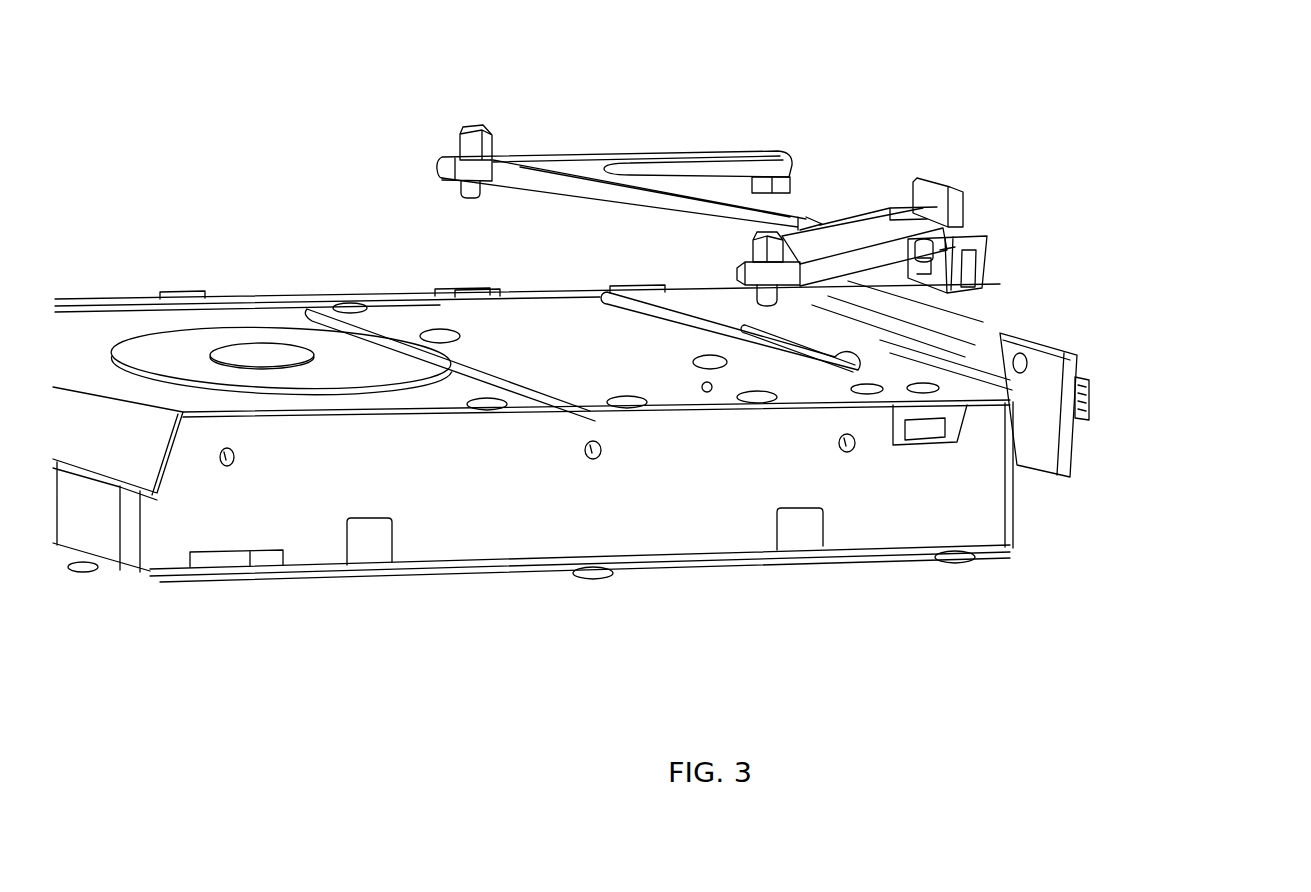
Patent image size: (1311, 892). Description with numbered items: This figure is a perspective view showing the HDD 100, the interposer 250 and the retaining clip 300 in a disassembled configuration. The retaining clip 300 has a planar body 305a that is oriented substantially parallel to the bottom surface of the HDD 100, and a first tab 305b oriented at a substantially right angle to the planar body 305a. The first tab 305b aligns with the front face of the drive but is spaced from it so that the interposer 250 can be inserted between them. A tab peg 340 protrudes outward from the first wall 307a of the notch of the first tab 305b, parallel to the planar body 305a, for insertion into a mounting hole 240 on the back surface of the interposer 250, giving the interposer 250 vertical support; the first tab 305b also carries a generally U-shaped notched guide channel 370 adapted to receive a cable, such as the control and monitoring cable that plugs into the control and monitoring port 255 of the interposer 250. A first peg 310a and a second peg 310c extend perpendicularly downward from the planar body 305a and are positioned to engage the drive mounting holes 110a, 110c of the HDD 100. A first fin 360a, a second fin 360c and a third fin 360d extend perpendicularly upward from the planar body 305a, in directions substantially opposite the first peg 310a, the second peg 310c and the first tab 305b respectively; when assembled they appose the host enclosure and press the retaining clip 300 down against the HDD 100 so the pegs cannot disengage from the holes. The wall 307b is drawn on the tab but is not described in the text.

The HDD 100 is at (666, 443).
The mounting hole 110a is at (748, 398).
The drive mounting hole 110c is at (476, 290).
The mounting hole 240 is at (1024, 373).
The interposer 250 is at (1139, 480).
The control and monitoring port 255 is at (1088, 390).
The retaining clip 300 is at (794, 386).
The planar body 305a is at (806, 205).
The first tab 305b is at (987, 290).
The first wall 307a is at (933, 260).
The second pin 307b is at (947, 252).
The first peg 310a is at (760, 297).
The second peg 310c is at (461, 195).
The tab peg 340 is at (1055, 462).
The first fin 360a is at (753, 246).
The second fin 360c is at (490, 136).
The third fin 360d is at (957, 192).
The guide channel 370 is at (972, 260).